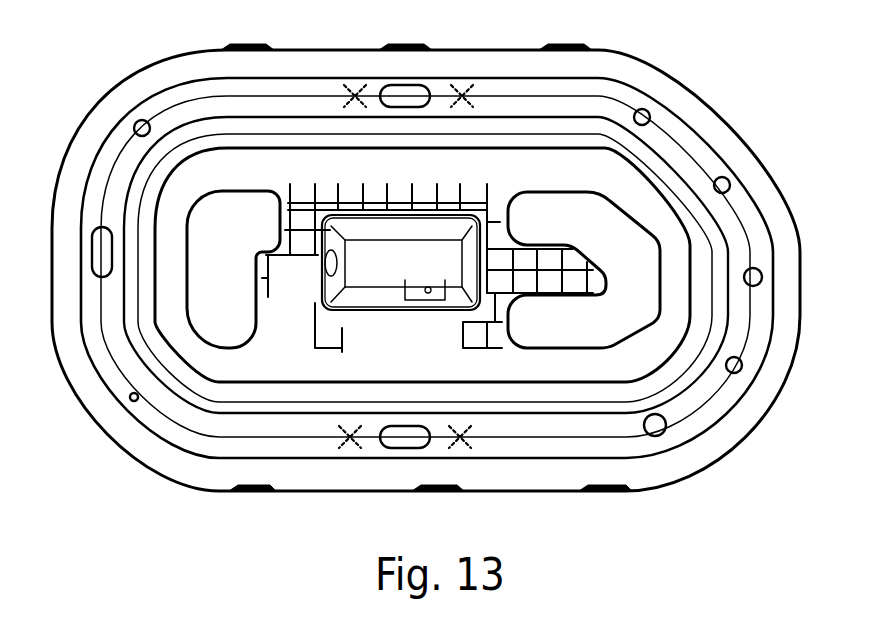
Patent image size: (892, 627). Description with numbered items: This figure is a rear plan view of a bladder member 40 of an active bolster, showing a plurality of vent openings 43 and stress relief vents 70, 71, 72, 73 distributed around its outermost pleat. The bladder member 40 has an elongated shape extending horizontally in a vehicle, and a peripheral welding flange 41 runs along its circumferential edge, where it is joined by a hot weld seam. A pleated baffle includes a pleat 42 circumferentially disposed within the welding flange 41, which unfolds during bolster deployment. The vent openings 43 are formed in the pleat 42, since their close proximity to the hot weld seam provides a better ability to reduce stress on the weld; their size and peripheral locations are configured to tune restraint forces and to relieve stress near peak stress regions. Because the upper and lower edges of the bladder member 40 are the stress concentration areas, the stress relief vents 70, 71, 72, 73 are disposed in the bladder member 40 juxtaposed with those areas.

The bladder member 40 is at (121, 56).
The peripheral welding flange 41 is at (83, 153).
The pleat 42 is at (95, 333).
The vent openings 43 is at (136, 122).
The stress relief vent 70 is at (355, 92).
The stress relief vent 71 is at (463, 92).
The stress relief vent 72 is at (349, 443).
The stress relief vent 73 is at (461, 443).